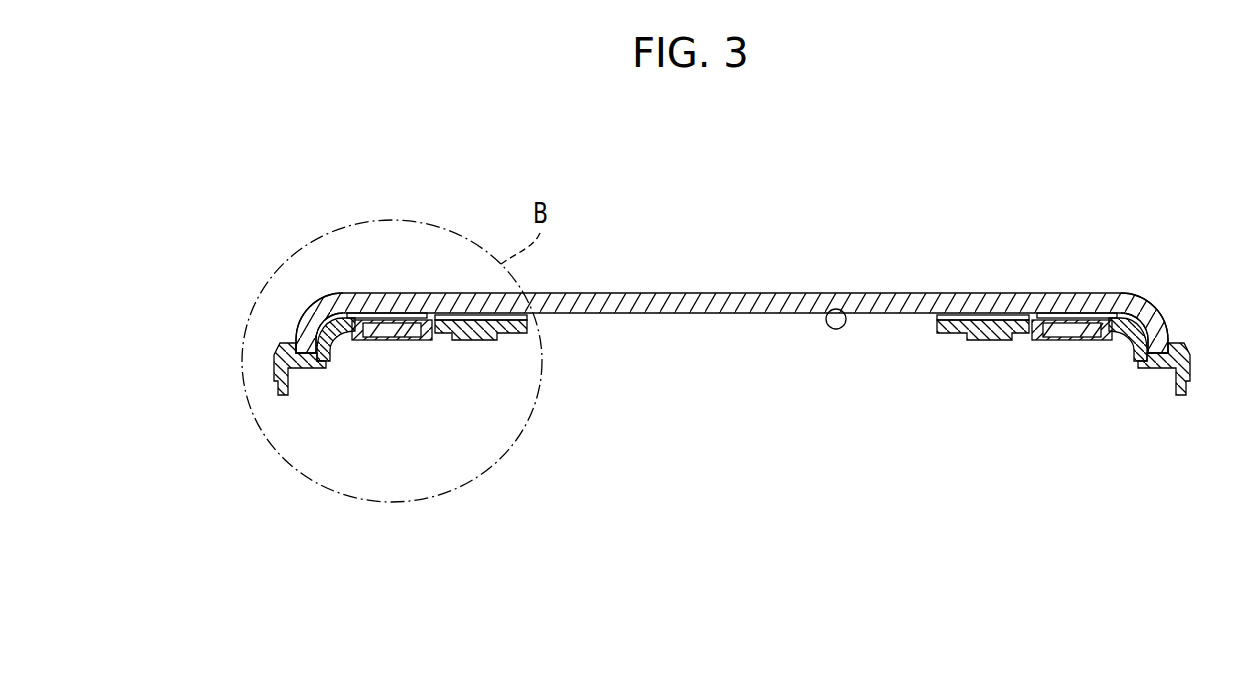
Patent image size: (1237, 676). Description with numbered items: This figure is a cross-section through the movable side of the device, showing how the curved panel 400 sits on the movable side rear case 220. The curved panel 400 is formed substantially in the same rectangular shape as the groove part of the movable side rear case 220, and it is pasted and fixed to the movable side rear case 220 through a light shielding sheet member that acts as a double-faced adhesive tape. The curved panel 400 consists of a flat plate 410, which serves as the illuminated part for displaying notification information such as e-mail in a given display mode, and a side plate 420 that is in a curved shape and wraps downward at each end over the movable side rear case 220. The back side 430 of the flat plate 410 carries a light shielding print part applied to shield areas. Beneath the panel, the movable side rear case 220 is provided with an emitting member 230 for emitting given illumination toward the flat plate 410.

The curved panel 400 is at (687, 288).
The side plate 420 is at (312, 328).
The flat plate 410 is at (1000, 316).
The back side 430 is at (827, 310).
The emitting member 230 is at (408, 333).
The movable side rear case 220 is at (281, 397).